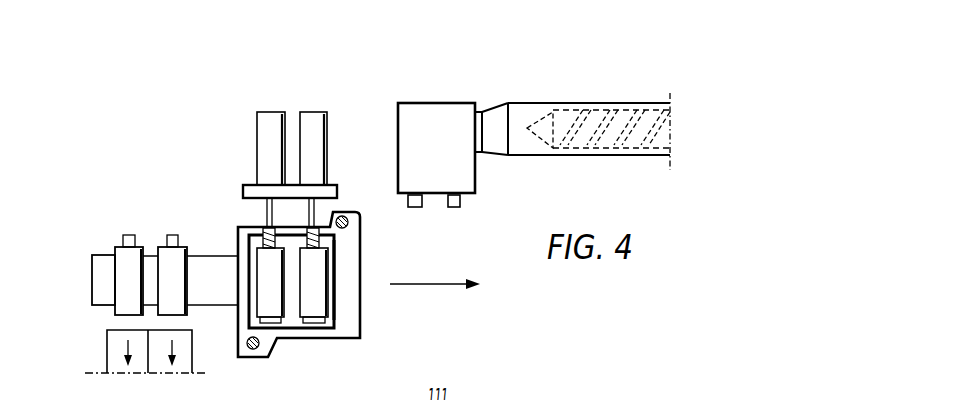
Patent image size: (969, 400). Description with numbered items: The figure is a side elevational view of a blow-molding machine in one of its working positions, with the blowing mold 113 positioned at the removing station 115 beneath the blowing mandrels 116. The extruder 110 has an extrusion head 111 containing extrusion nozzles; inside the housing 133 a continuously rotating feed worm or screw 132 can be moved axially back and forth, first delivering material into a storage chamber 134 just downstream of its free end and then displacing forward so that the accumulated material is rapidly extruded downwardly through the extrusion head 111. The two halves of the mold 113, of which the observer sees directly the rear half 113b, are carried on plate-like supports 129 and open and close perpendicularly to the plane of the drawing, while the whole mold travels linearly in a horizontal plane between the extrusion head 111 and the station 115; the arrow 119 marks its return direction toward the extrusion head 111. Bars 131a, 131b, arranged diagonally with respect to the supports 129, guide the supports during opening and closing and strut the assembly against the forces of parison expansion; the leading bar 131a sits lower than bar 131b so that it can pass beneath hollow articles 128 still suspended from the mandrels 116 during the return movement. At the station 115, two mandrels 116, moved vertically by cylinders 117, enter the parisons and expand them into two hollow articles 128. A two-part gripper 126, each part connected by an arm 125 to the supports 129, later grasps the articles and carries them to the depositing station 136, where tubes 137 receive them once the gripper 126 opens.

The extruder 110 is at (574, 103).
The extrusion head 111 is at (430, 112).
The blowing mold 113 is at (334, 243).
The rear half of the mold 113b is at (335, 290).
The removing station 115 is at (297, 100).
The blowing mandrels 116 is at (267, 210).
The cylinders 117 is at (265, 137).
The arrow 119 is at (433, 287).
The arm 125 is at (215, 298).
The gripper 126 is at (93, 288).
The hollow articles 128 is at (318, 308).
The plate-like supports 129 is at (356, 268).
The bar 131a is at (253, 350).
The bar 131b is at (345, 215).
The feed worm or screw 132 is at (626, 120).
The housing 133 is at (528, 103).
The storage chamber 134 is at (518, 157).
The depositing station 136 is at (142, 218).
The tubes 137 is at (113, 370).